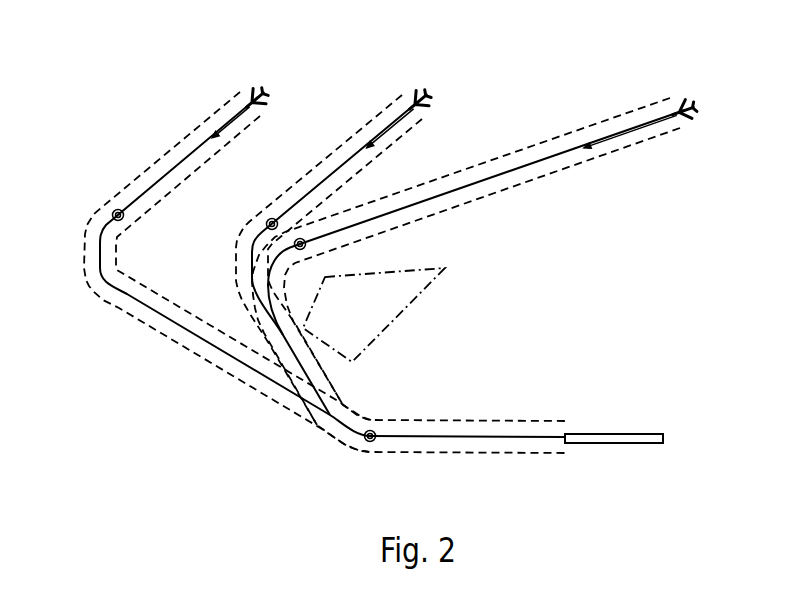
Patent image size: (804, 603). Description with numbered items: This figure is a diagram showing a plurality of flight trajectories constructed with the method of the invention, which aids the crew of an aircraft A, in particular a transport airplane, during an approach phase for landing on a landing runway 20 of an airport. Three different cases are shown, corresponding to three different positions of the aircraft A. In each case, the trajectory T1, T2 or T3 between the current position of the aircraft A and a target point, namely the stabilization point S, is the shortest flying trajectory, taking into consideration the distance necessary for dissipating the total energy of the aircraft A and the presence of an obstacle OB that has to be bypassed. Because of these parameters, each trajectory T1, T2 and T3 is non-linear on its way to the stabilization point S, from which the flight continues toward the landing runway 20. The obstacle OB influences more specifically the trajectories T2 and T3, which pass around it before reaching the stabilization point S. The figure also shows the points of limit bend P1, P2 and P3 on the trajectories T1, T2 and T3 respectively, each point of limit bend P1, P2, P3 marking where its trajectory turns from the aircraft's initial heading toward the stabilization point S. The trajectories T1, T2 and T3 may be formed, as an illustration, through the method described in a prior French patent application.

The aircraft A is at (254, 92).
The trajectory T1 is at (155, 185).
The trajectory T2 is at (322, 183).
The trajectory T3 is at (520, 169).
The point of limit bend P1 is at (113, 211).
The point of limit bend P2 is at (268, 219).
The point of limit bend P3 is at (294, 244).
The stabilization point S is at (376, 430).
The obstacle OB is at (413, 300).
The landing runway 20 is at (613, 447).